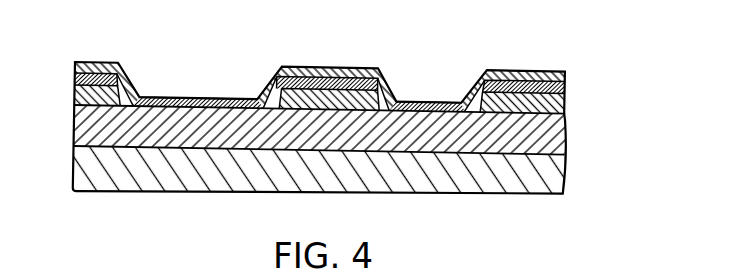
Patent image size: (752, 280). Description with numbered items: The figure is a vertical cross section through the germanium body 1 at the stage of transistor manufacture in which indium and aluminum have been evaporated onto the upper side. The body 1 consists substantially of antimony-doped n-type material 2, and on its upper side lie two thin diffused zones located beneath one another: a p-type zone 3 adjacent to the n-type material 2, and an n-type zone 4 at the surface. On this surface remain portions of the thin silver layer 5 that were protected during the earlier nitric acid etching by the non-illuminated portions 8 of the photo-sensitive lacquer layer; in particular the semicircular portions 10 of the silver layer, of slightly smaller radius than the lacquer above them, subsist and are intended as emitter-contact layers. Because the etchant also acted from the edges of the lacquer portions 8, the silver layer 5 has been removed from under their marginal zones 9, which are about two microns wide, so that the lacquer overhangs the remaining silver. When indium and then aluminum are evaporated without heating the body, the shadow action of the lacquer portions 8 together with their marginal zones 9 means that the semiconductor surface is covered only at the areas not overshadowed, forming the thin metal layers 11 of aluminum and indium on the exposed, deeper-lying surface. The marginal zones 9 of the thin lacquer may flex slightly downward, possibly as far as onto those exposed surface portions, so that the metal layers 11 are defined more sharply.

The germanium body 1 is at (583, 148).
The n-type material 2 is at (552, 169).
The p-type zone 3 is at (550, 124).
The n-type zone 4 is at (88, 97).
The silver layer 5 is at (77, 77).
The non-illuminated portions of the photo-sensitive lacquer layer 8 is at (98, 67).
The marginal zones 9 is at (133, 91).
The semicircular portions of the silver layer 10 is at (348, 78).
The thin metal layers 11 is at (186, 95).